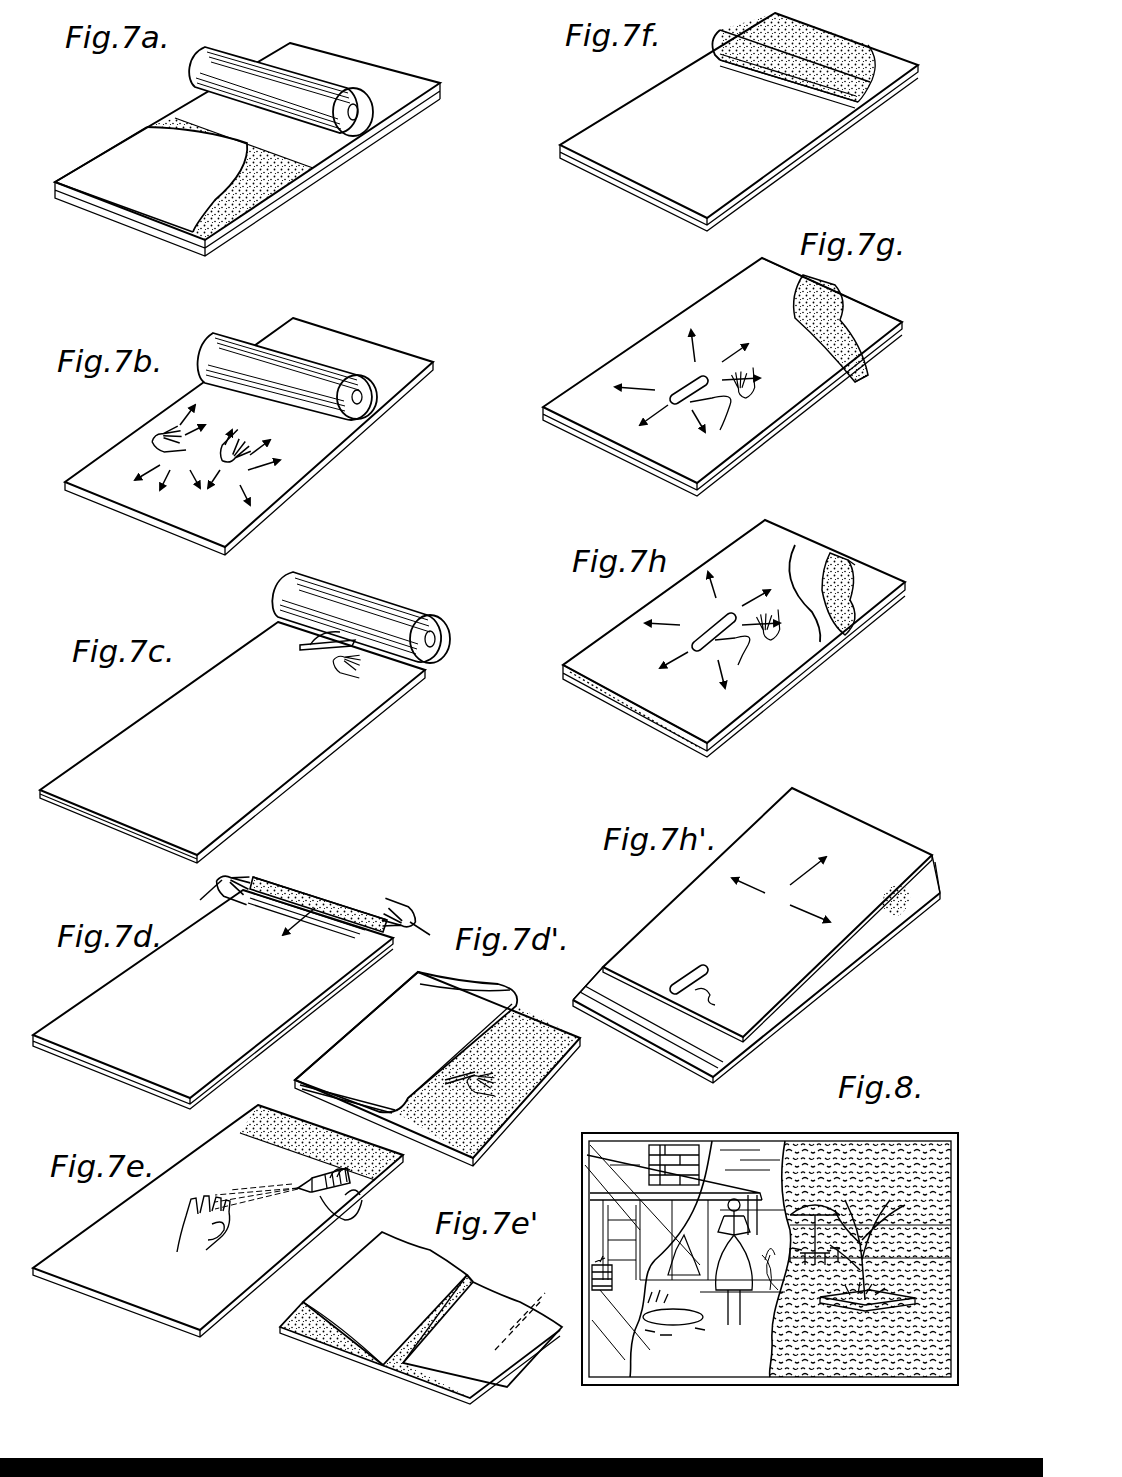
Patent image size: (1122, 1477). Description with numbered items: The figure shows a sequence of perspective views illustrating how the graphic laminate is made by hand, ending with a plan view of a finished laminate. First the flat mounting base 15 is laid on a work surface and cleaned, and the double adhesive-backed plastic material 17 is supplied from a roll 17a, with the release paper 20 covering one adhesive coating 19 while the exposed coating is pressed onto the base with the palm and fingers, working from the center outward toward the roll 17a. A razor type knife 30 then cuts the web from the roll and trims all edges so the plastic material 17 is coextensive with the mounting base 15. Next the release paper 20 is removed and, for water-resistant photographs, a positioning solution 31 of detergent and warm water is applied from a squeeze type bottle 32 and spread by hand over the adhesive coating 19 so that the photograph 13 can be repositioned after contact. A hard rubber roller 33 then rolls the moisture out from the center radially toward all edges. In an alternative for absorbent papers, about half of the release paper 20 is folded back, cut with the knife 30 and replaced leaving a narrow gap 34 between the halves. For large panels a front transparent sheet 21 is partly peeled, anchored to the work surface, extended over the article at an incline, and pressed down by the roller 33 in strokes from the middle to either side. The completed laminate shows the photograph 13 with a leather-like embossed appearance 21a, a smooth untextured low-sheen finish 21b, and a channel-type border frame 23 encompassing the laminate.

In FIG. 7F, the photograph 13 is at (722, 28).
In FIG. 7G, the photograph 13 is at (705, 305).
In FIG. 7H, the photograph 13 is at (815, 548).
In FIG. 7H', the photograph 13 is at (880, 925).
In FIG. 7A, the flat mounting base 15 is at (392, 78).
In FIG. 7B, the flat mounting base 15 is at (378, 350).
In FIG. 7C, the flat mounting base 15 is at (355, 738).
In FIG. 7D, the flat mounting base 15 is at (213, 999).
In FIG. 7D', the flat mounting base 15 is at (437, 1069).
In FIG. 7E, the flat mounting base 15 is at (218, 1221).
In FIG. 7F, the flat mounting base 15 is at (893, 72).
In FIG. 7G, the flat mounting base 15 is at (887, 328).
In FIG. 7H, the flat mounting base 15 is at (882, 580).
In FIG. 7H', the flat mounting base 15 is at (865, 958).
In FIG. 7A, the plastic material 17 is at (268, 197).
In FIG. 7C, the plastic material 17 is at (292, 778).
In FIG. 7D, the plastic material 17 is at (318, 893).
In FIG. 7D', the plastic material 17 is at (555, 1068).
In FIG. 7E, the plastic material 17 is at (380, 1175).
In FIG. 7E', the plastic material 17 is at (360, 1366).
In FIG. 7F, the plastic material 17 is at (862, 40).
In FIG. 7G, the plastic material 17 is at (845, 360).
In FIG. 7H, the plastic material 17 is at (840, 570).
In FIG. 7H', the plastic material 17 is at (925, 905).
In FIG. 7A, the roll 17a is at (360, 128).
In FIG. 7B, the roll 17a is at (362, 418).
In FIG. 7C, the roll 17a is at (437, 665).
In FIG. 7A, the coating of pressure sensitive adhesive 19 is at (190, 118).
In FIG. 7D, the coating of pressure sensitive adhesive 19 is at (360, 905).
In FIG. 7D', the coating of pressure sensitive adhesive 19 is at (495, 1118).
In FIG. 7E, the coating of pressure sensitive adhesive 19 is at (262, 1135).
In FIG. 7E', the coating of pressure sensitive adhesive 19 is at (315, 1330).
In FIG. 7F, the coating of pressure sensitive adhesive 19 is at (812, 38).
In FIG. 7G, the coating of pressure sensitive adhesive 19 is at (830, 305).
In FIG. 7H, the coating of pressure sensitive adhesive 19 is at (855, 610).
In FIG. 7H', the coating of pressure sensitive adhesive 19 is at (918, 870).
In FIG. 7A, the release paper 20 is at (103, 158).
In FIG. 7D, the release paper 20 is at (283, 890).
In FIG. 7D', the release paper 20 is at (478, 992).
In FIG. 7E', the release paper 20 is at (432, 1309).
In FIG. 7H, the front transparent sheet 21 is at (635, 625).
In FIG. 7H', the front transparent sheet 21 is at (848, 820).
In FIG. 8, the leather-like appearance 21a is at (940, 1150).
In FIG. 8, the untextured low-sheen finish 21b is at (632, 1155).
In FIG. 8, the channel-type border frame 23 is at (820, 1138).
In FIG. 7C, the razor type knife 30 is at (308, 648).
In FIG. 7D', the razor type knife 30 is at (450, 1078).
In FIG. 7E, the positioning solution 31 is at (258, 1198).
In FIG. 7E, the squeeze type bottle 32 is at (312, 1190).
In FIG. 7G, the hard rubber roller 33 is at (678, 385).
In FIG. 7H, the hard rubber roller 33 is at (725, 612).
In FIG. 7H', the hard rubber roller 33 is at (697, 970).
In FIG. 7E', the narrow gap 34 is at (470, 1278).